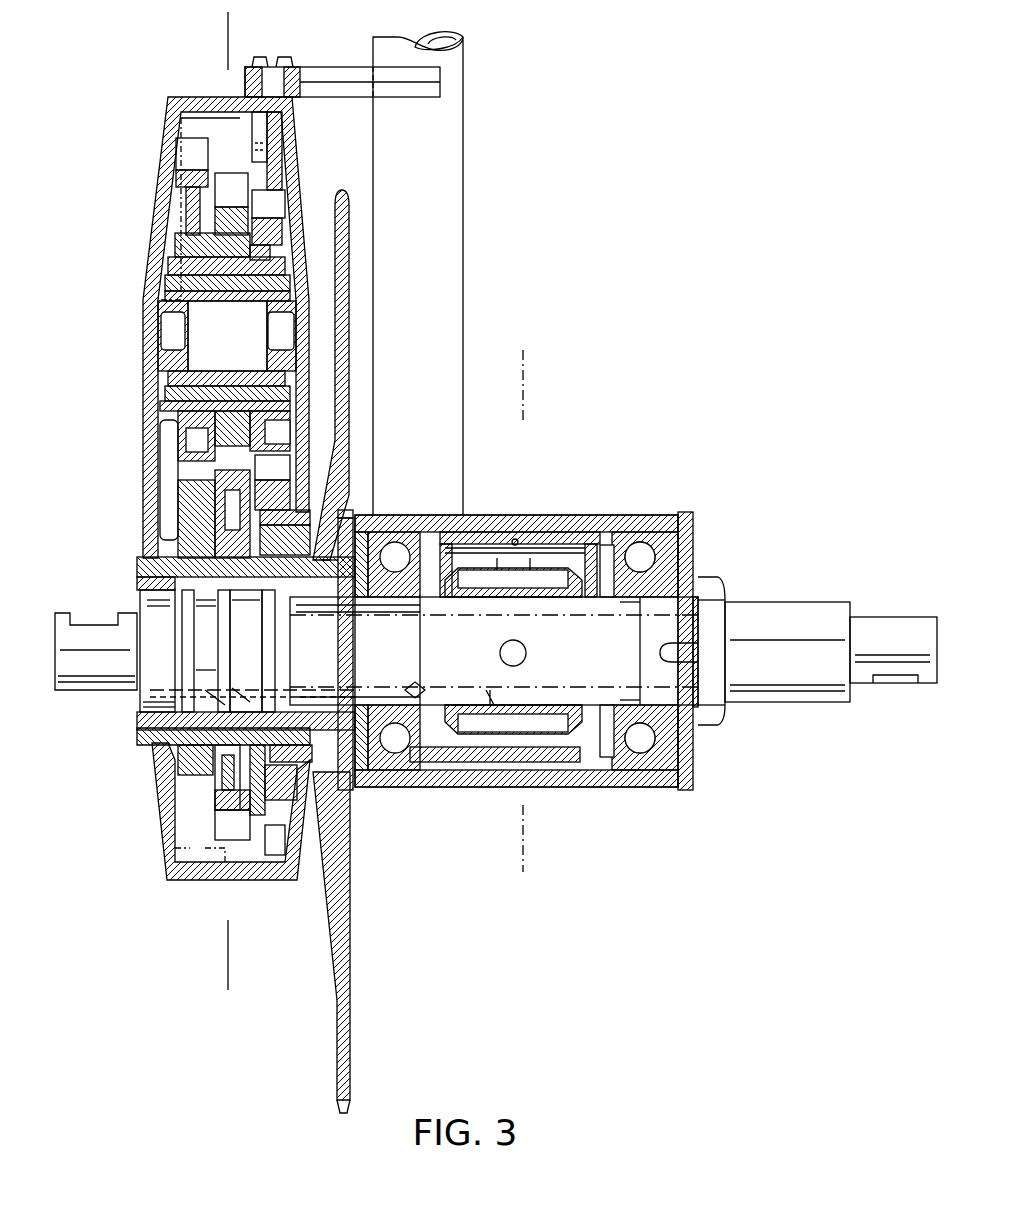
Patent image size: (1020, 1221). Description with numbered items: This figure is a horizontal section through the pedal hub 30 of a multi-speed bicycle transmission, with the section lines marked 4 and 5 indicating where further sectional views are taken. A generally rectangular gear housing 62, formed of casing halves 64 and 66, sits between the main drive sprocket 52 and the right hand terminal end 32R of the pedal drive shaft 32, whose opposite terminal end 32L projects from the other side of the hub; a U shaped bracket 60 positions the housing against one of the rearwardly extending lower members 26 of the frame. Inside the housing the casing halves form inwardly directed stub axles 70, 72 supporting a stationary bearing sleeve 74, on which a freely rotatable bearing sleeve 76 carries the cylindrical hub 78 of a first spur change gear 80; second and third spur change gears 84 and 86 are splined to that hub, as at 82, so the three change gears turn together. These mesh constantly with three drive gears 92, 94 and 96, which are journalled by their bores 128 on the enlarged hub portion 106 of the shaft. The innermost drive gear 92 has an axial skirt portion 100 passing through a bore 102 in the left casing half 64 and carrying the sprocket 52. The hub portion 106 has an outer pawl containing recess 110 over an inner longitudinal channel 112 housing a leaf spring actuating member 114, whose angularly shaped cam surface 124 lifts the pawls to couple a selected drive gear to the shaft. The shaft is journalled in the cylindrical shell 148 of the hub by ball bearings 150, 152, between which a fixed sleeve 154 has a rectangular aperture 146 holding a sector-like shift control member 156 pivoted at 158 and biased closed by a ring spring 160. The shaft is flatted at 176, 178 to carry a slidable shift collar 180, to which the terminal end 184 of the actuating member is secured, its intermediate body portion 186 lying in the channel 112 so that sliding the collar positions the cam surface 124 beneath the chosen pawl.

The section line 4- 4 is at (215, 24).
The section line 5- 5 is at (532, 383).
The rearwardly extending lower member 26 is at (465, 270).
The pedal hub 30 is at (652, 508).
The pedal drive shaft 32 is at (348, 642).
The right hand terminal end of pedal drive shaft 32R is at (38, 630).
The left axle shaft end 32L is at (948, 640).
The main drive sprocket 52 is at (350, 270).
The U shaped bracket 60 is at (346, 76).
The gear housing 62 is at (168, 97).
The left casing half 64 is at (294, 138).
The casing half 66 is at (160, 148).
The stub axle 70 is at (180, 300).
The stub axle 72 is at (282, 300).
The stationary bearing sleeve 74 is at (188, 331).
The freely rotatable bearing sleeve 76 is at (253, 336).
The cylindrical hub 78 is at (168, 268).
The first spur change gear 80 is at (285, 225).
The spline 82 is at (176, 245).
The second spur change gear 84 is at (231, 204).
The third spur change gear 86 is at (176, 180).
The innermost drive gear 92 is at (268, 815).
The drive gear 94 is at (215, 793).
The drive gear 96 is at (180, 763).
The cylindrical flange or skirt portion 100 is at (264, 559).
The bore 102 is at (318, 522).
The enlarged hub portion 106 is at (228, 651).
The outer recess 110 is at (148, 704).
The longitudinal channel 112 is at (160, 688).
The leaf spring type actuating member 114 is at (262, 698).
The angularly shaped cam surface 124 is at (238, 700).
The bore of drive gear 128 is at (245, 590).
The rectangularly shaped aperture 146 is at (502, 532).
The cylindrical shell 148 is at (580, 515).
The ball bearing 150 is at (690, 568).
The ball bearing 152 is at (398, 532).
The fixed cylindrical sleeve 154 is at (406, 562).
The sector-like member 156 is at (533, 532).
The pivot 158 is at (600, 530).
The ring type biasing spring 160 is at (505, 542).
The flatted portion 176 is at (598, 600).
The flatted portion 178 is at (606, 700).
The shift collar member 180 is at (458, 612).
The terminal end of actuating member 184 is at (490, 698).
The intermediate body portion 186 is at (412, 690).